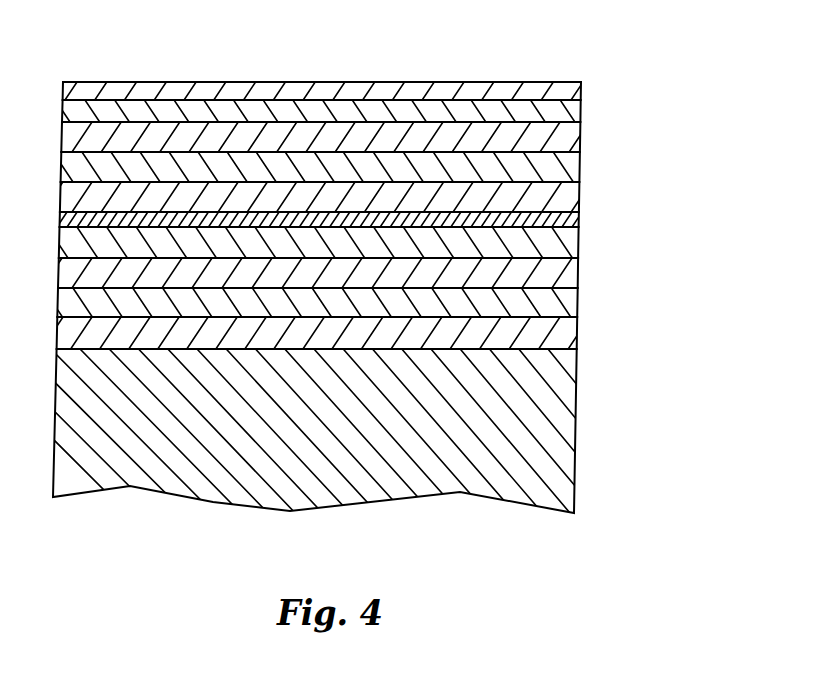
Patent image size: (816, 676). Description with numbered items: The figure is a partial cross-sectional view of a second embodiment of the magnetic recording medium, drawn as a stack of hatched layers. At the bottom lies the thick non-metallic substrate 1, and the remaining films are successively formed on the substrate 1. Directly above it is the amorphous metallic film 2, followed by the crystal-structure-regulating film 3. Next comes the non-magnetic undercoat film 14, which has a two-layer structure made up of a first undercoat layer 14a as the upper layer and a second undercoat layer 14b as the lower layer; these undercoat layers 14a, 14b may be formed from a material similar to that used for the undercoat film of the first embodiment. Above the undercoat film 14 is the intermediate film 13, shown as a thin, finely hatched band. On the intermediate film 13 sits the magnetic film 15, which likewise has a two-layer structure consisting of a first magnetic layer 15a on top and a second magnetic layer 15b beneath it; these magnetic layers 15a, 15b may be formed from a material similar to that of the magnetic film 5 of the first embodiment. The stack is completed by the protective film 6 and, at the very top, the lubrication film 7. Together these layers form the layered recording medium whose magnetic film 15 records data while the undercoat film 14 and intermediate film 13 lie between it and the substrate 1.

The non-metallic substrate 1 is at (565, 417).
The amorphous metallic film 2 is at (563, 342).
The crystal-structure-regulating film 3 is at (563, 313).
The magnetic film 5 is at (580, 127).
The protective film 6 is at (580, 102).
The lubrication film 7 is at (567, 83).
The intermediate film 13 is at (573, 225).
The non-magnetic undercoat film 14 is at (383, 263).
The first undercoat layer 14a is at (570, 250).
The second undercoat layer 14b is at (572, 282).
The magnetic film 15 is at (382, 178).
The first magnetic layer 15a is at (570, 173).
The second magnetic layer 15b is at (568, 202).